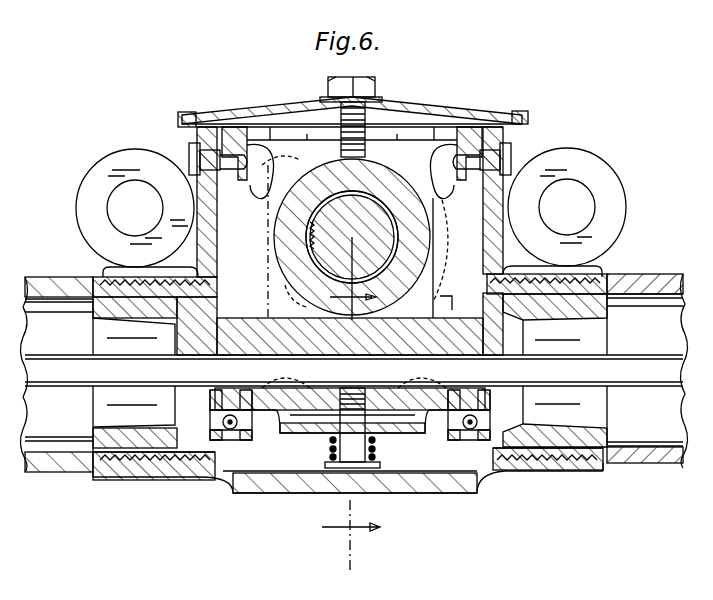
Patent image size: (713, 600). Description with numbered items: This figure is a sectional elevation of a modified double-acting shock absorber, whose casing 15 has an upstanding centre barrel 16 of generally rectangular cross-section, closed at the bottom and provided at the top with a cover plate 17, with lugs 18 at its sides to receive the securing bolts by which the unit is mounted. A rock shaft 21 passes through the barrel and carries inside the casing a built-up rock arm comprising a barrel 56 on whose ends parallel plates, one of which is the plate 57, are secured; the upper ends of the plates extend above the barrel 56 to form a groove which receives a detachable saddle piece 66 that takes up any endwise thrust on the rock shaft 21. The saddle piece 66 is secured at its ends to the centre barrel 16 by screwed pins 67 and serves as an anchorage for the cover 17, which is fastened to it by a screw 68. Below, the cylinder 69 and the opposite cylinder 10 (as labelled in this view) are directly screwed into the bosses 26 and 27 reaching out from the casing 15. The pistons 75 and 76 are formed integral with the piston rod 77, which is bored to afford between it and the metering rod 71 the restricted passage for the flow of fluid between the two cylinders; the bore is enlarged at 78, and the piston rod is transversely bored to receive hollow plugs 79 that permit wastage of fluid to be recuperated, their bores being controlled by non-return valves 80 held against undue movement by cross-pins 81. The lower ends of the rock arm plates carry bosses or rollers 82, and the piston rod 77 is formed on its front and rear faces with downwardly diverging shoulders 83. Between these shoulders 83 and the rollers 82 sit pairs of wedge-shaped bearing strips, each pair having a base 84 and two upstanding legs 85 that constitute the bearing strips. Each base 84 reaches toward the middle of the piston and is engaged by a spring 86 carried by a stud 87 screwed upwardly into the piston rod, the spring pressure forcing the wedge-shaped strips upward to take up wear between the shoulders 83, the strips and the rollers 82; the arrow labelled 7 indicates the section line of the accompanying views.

The section line 7 is at (351, 539).
The pipe 10 is at (660, 251).
The casing 15 is at (230, 484).
The centre barrel 16 is at (490, 207).
The cover plate 17 is at (402, 106).
The lugs 18 is at (95, 188).
The rock shaft 21 is at (378, 233).
The boss 26 is at (147, 480).
The boss 27 is at (602, 468).
The barrel 56 is at (292, 250).
The plate 57 is at (278, 222).
The saddle piece 66 is at (455, 121).
The screwed pins 67 is at (192, 150).
The screw 68 is at (330, 88).
The cylinder 69 is at (35, 462).
The metering rod 71 is at (82, 354).
The piston 75 is at (100, 452).
The piston 76 is at (652, 466).
The piston rod 77 is at (458, 294).
The enlarged bore 78 is at (173, 452).
The hollow plugs 79 is at (246, 441).
The non-return valves 80 is at (232, 442).
The cross-pins 81 is at (228, 414).
The bosses or rollers 82 is at (278, 284).
The shoulders 83 is at (282, 300).
The base 84 is at (318, 440).
The legs 85 is at (284, 434).
The spring 86 is at (378, 440).
The stud 87 is at (367, 425).